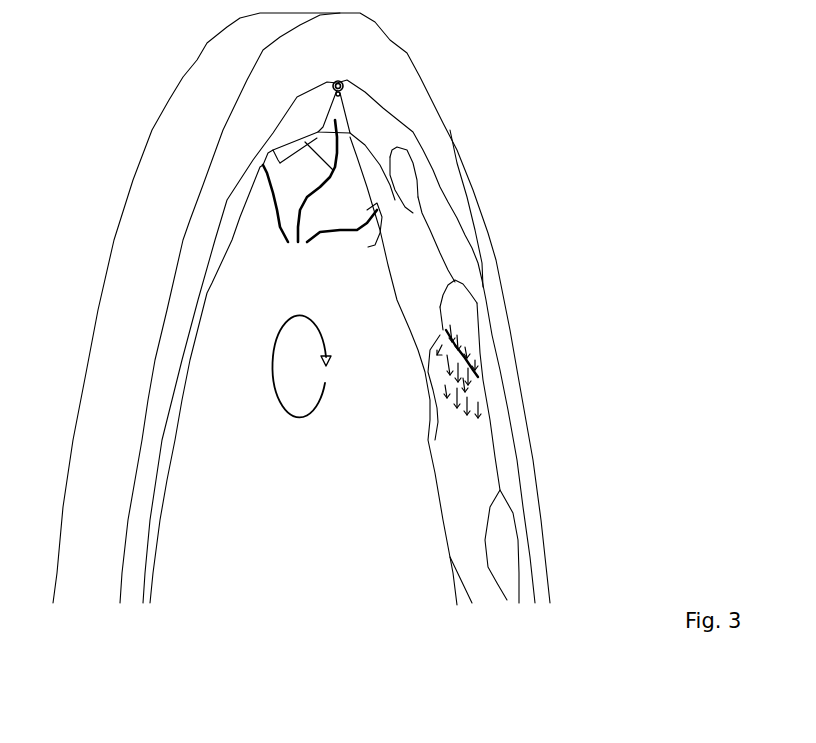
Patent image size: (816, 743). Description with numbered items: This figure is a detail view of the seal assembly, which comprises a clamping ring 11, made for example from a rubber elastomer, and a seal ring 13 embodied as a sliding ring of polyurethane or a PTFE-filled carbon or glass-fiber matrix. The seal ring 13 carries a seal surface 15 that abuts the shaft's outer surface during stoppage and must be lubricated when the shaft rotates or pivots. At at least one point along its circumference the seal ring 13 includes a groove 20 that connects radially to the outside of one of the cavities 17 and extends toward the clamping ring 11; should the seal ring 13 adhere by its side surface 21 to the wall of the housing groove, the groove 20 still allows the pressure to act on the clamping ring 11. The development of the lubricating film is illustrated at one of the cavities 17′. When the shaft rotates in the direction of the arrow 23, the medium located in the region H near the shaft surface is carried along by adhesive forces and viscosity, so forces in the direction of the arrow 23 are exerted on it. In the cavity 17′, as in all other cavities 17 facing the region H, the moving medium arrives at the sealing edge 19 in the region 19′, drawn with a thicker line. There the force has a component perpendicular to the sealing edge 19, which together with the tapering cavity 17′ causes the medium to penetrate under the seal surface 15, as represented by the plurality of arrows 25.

The clamping ring 11 is at (301, 308).
The seal ring 13 is at (339, 329).
The seal surface 15 is at (428, 371).
The cavities 17 is at (331, 361).
The cavity 17′ is at (497, 348).
The sealing edge 19 is at (534, 376).
The region 19′ is at (513, 348).
The groove 20 is at (391, 75).
The side surface 21 is at (507, 366).
The arrow 23 is at (259, 386).
The arrows 25 is at (531, 422).
The region H is at (524, 353).